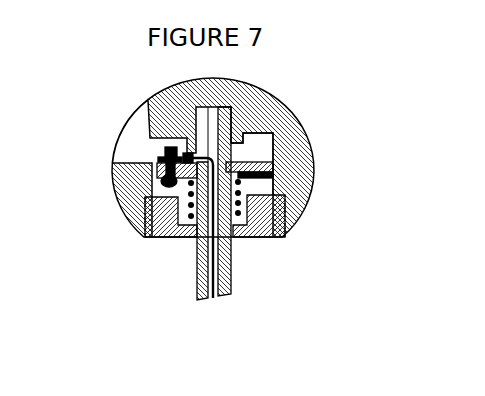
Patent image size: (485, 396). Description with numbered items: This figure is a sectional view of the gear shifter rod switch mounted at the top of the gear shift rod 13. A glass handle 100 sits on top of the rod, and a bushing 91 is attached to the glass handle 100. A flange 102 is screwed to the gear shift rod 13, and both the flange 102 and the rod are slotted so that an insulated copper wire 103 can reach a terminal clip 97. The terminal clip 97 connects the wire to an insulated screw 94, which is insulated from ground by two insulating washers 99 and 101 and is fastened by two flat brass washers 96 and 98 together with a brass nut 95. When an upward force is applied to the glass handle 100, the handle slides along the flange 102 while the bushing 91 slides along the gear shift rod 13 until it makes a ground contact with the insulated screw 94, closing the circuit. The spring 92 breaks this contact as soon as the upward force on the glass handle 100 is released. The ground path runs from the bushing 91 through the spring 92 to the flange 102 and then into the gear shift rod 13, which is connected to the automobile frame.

The gear shift rod 13 is at (232, 278).
The bushing 91 is at (260, 234).
The spring 92 is at (190, 226).
The insulated screw 94 is at (165, 148).
The brass nut 95 is at (165, 155).
The flat brass washer 96 is at (166, 157).
The terminal clip 97 is at (183, 153).
The flat brass washer 98 is at (157, 165).
The insulating washer 99 is at (241, 163).
The glass handle 100 is at (282, 102).
The insulating washer 101 is at (273, 176).
The flange 102 is at (273, 167).
The insulated copper wire 103 is at (213, 298).